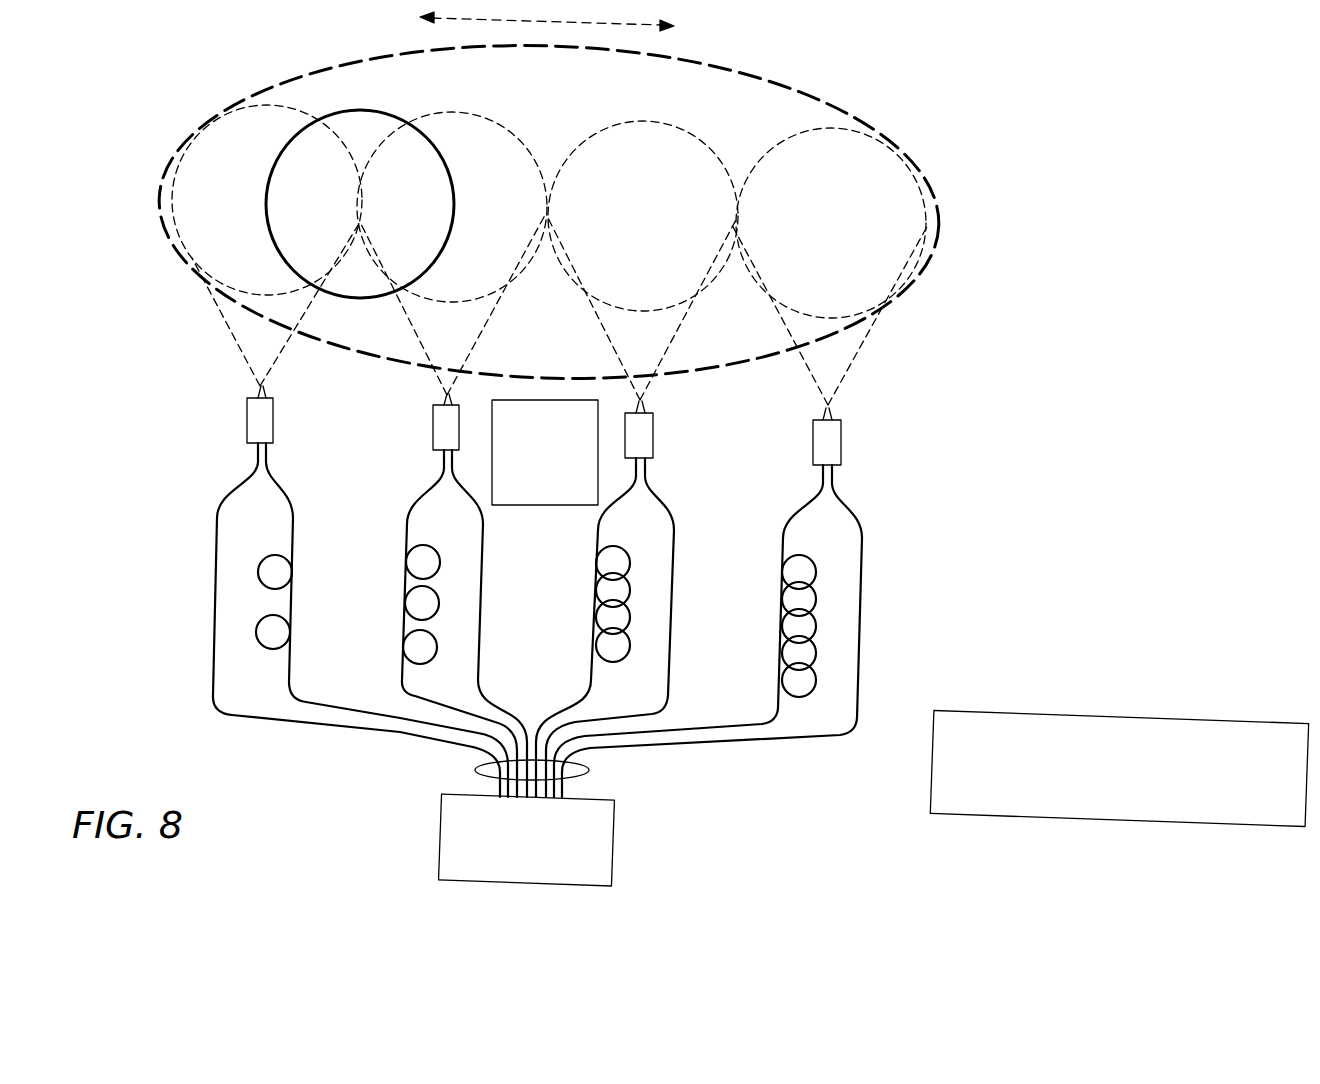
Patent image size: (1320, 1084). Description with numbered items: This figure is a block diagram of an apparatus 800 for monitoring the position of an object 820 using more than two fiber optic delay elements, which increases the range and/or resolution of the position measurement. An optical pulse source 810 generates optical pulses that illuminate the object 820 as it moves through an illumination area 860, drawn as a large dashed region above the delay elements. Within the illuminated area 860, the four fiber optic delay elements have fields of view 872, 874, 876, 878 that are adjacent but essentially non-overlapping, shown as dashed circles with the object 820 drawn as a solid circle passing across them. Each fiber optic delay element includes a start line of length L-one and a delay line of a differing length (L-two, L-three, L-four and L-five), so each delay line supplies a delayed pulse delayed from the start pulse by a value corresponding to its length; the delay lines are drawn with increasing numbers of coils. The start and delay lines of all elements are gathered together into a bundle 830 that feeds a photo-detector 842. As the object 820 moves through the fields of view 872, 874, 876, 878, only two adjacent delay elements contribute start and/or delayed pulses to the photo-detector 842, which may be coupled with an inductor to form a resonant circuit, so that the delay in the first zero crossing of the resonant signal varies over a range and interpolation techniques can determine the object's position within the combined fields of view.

The apparatus 800 is at (1064, 319).
The optical pulse source 810 is at (543, 508).
The object 820 is at (383, 110).
The fiber bundle 830 is at (589, 773).
The photo-detector 842 is at (614, 851).
The illumination area 860 is at (160, 192).
The field of view 872 is at (268, 296).
The field of view 874 is at (437, 296).
The field of view 876 is at (650, 312).
The field of view 878 is at (822, 317).